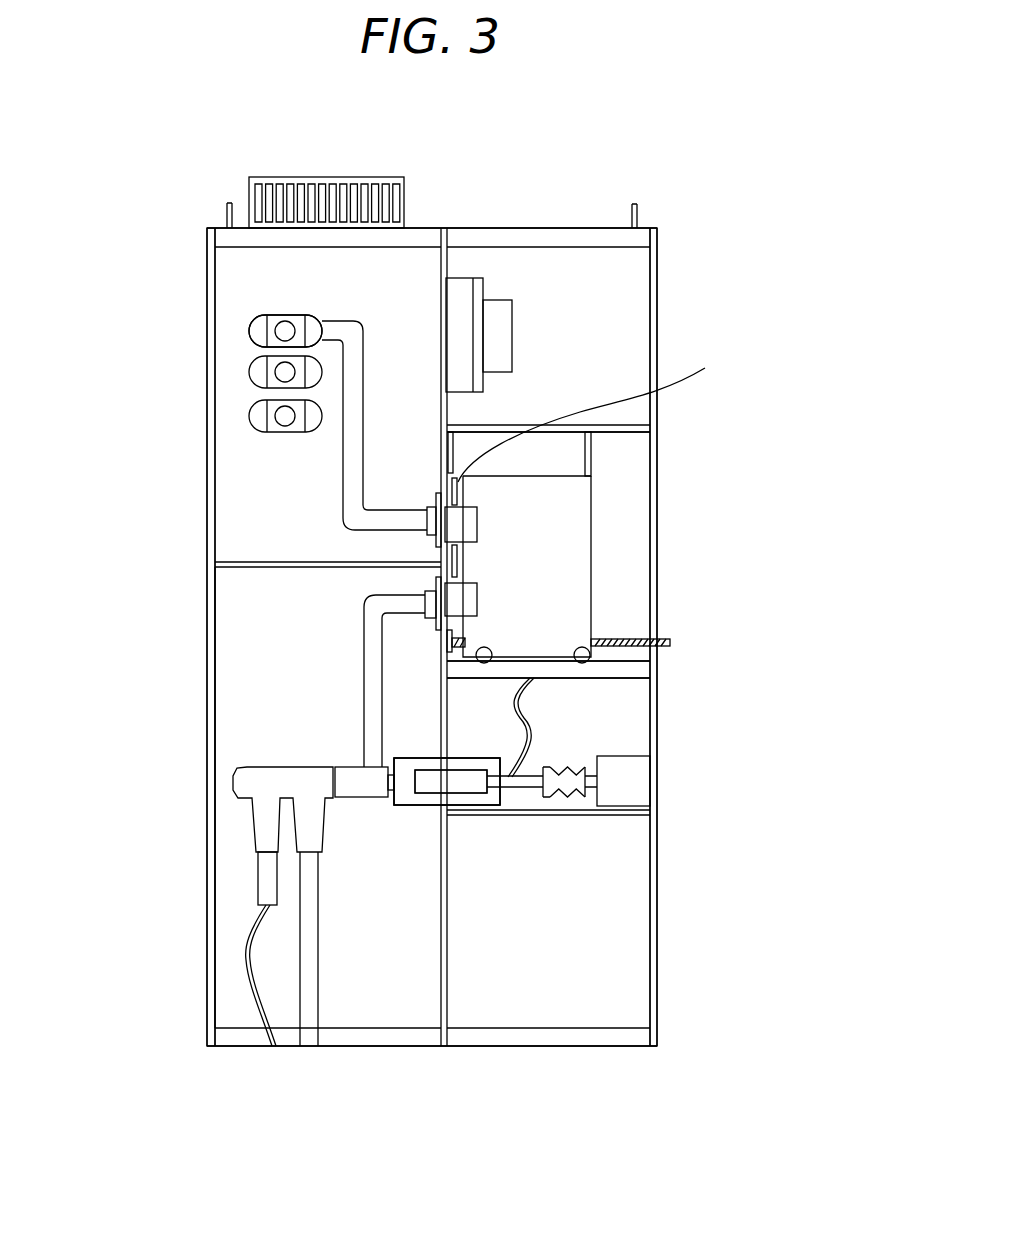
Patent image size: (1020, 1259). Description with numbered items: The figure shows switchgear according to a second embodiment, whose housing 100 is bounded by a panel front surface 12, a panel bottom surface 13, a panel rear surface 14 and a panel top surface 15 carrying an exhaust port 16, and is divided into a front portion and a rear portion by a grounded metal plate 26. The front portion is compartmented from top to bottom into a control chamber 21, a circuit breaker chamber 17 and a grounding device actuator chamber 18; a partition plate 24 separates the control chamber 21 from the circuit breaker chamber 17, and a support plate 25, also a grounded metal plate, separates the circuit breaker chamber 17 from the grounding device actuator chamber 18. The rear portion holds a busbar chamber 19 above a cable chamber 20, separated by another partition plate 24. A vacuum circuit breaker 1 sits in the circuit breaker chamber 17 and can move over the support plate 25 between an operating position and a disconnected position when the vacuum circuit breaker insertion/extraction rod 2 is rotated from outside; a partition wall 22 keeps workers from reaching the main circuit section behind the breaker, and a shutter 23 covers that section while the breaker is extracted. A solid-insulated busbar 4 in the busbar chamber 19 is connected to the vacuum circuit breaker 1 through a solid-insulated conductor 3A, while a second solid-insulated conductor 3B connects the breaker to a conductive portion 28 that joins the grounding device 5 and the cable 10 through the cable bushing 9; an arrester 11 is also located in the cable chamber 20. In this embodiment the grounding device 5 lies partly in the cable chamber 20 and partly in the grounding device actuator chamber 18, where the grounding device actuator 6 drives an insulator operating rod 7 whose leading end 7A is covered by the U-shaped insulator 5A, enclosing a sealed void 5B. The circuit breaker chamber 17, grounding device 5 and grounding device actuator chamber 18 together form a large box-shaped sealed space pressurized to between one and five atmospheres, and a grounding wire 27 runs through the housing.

The housing 100 is at (657, 263).
The exhaust port 16 is at (357, 177).
The panel top surface 15 is at (540, 228).
The control chamber 21 is at (623, 318).
The shutter 23 is at (705, 368).
The partition plate 24 is at (638, 425).
The partition wall 22 is at (592, 460).
The circuit breaker chamber 17 is at (640, 500).
The vacuum circuit breaker 1 is at (572, 567).
The vacuum circuit breaker insertion/extraction rod 2 is at (650, 637).
The support plate 25 is at (641, 670).
The grounding device actuator chamber 18 is at (641, 697).
The grounding wire 27 is at (537, 738).
The grounding device actuator 6 is at (618, 782).
The panel front surface 12 is at (656, 963).
The panel bottom surface 13 is at (608, 1046).
The insulator operating rod 7 is at (522, 790).
The leading end of insulator operating rod 7A is at (463, 795).
The grounded metal plate 26 is at (447, 992).
The cable 10 is at (300, 998).
The arrester 11 is at (258, 877).
The cable chamber 20 is at (223, 928).
The panel rear surface 14 is at (210, 812).
The cable bushing 9 is at (285, 767).
The grounding device 5 is at (408, 760).
The insulator 5A is at (403, 792).
The void 5B is at (430, 783).
The conductive portion 28 is at (363, 788).
The solid-insulated conductor 3A is at (343, 492).
The solid-insulated conductor 3B is at (363, 640).
The solid-insulated busbar 4 is at (263, 332).
The busbar chamber 19 is at (233, 402).